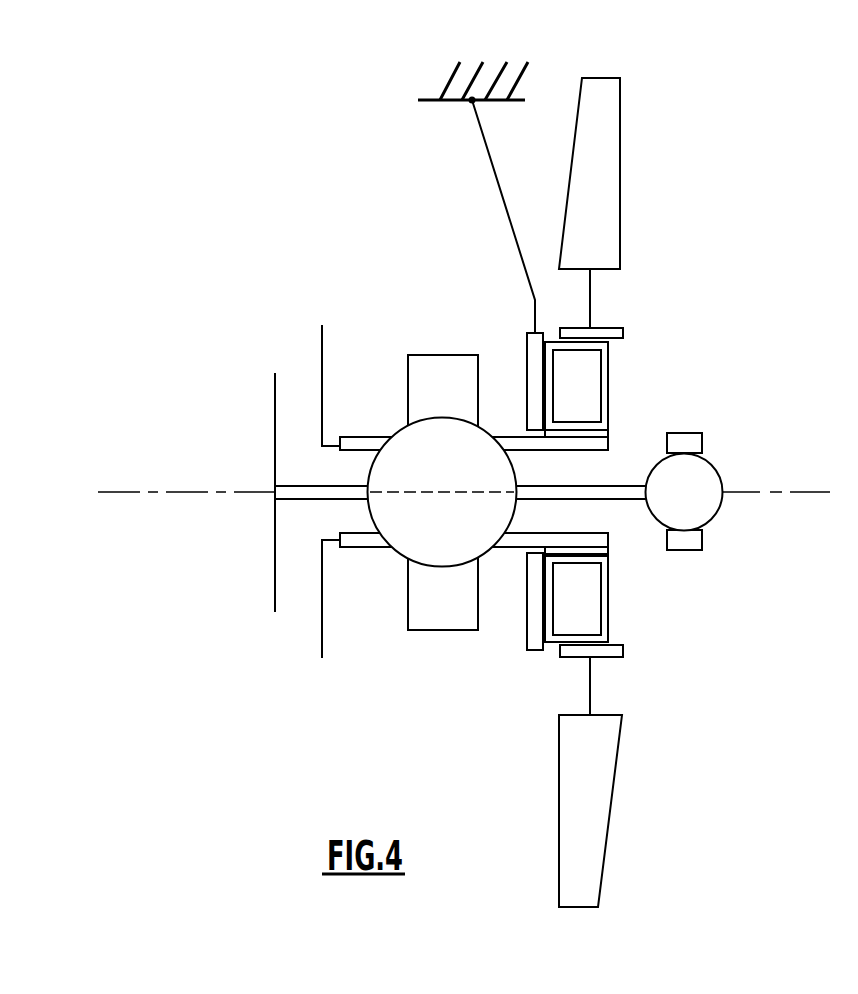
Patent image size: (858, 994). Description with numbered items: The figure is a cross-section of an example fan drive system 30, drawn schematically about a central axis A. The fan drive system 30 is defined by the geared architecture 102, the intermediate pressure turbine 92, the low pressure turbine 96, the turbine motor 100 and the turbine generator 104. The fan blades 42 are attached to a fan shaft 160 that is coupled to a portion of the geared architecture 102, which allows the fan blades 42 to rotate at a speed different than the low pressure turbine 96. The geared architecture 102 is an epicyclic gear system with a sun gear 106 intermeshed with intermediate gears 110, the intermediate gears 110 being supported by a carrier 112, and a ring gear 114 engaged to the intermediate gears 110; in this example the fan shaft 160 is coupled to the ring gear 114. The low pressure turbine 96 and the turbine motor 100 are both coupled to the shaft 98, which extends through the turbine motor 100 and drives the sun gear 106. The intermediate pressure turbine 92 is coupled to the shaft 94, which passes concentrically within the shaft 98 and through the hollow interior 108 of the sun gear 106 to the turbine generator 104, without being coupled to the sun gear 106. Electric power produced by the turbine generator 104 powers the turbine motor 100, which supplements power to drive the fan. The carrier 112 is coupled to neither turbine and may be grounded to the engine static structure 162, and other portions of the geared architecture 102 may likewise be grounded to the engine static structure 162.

The fan drive system 30 is at (314, 169).
The fan blades 42 is at (613, 172).
The intermediate pressure turbine 92 is at (275, 403).
The shaft 94 is at (320, 501).
The low pressure turbine 96 is at (322, 343).
The shaft 98 is at (353, 548).
The turbine motor 100 is at (402, 442).
The geared architecture 102 is at (702, 290).
The turbine generator 104 is at (685, 520).
The sun gear 106 is at (574, 430).
The hollow interior 108 is at (598, 468).
The intermediate gears 110 is at (578, 594).
The carrier 112 is at (535, 635).
The ring gear 114 is at (612, 658).
The fan shaft 160 is at (590, 302).
The engine static structure 162 is at (523, 73).
The axis A is at (180, 493).